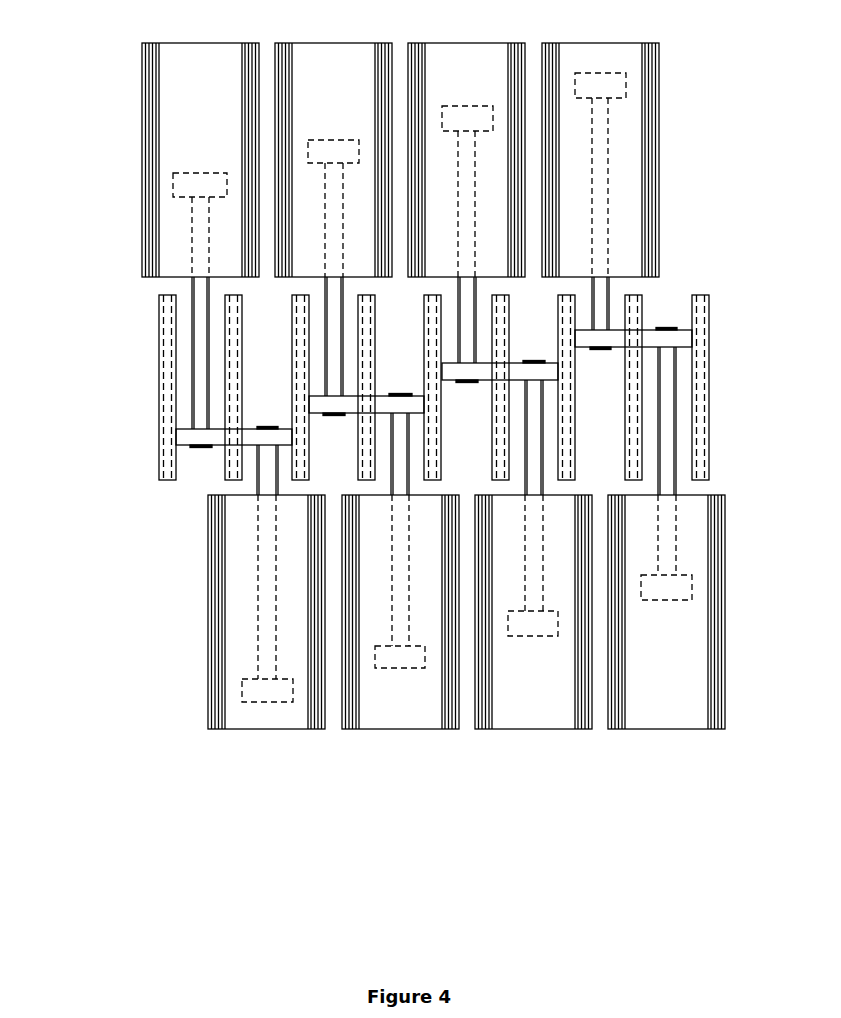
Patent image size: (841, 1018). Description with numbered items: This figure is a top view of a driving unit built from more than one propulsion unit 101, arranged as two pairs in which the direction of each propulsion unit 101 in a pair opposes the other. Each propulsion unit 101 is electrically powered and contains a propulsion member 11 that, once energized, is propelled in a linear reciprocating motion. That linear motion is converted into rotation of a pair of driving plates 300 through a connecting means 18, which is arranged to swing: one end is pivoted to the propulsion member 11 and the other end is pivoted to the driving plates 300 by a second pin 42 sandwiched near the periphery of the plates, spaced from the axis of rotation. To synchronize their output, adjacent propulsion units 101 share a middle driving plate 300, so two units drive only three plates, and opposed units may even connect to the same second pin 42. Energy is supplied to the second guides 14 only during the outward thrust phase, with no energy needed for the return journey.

The second guide 14 is at (143, 75).
The propulsion unit 101 is at (610, 44).
The driving plate 300 is at (708, 330).
The second pin 42 is at (190, 447).
The connecting means 18 is at (259, 578).
The propulsion member 11 is at (395, 665).